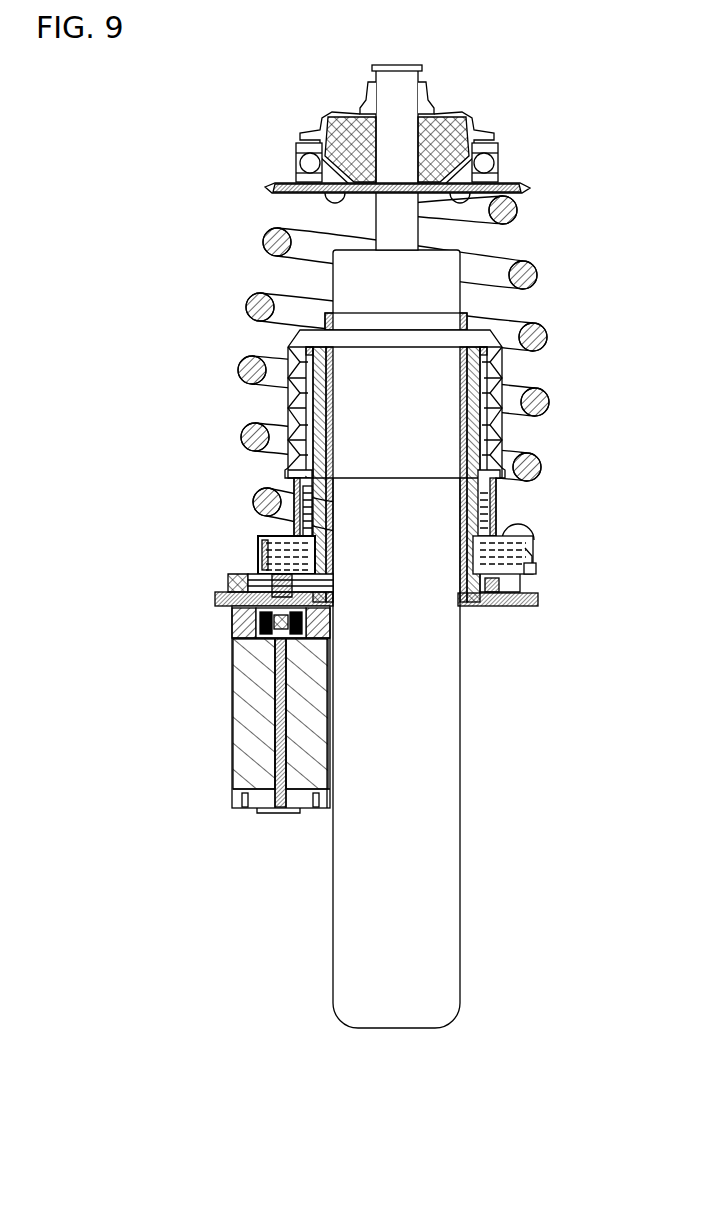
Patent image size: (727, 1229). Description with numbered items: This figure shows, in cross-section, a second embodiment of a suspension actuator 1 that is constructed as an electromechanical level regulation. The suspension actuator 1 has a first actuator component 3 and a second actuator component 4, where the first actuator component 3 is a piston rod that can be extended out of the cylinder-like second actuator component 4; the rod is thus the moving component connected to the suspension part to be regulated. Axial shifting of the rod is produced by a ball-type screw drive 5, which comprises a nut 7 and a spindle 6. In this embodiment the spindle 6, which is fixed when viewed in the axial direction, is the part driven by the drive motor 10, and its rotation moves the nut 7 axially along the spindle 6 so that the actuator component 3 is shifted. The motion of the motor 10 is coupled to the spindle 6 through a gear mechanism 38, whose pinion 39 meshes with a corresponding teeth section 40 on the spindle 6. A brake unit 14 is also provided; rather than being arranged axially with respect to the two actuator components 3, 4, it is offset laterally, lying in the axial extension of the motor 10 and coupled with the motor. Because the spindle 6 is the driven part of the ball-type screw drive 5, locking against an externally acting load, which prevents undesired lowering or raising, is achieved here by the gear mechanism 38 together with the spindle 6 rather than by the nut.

The suspension actuator 1 is at (192, 192).
The first actuator component 3 is at (403, 97).
The second actuator component 4 is at (438, 822).
The ball-type screw drive 5 is at (248, 401).
The spindle 6 is at (494, 420).
The nut 7 is at (298, 521).
The drive motor 10 is at (228, 768).
The brake unit 14 is at (213, 603).
The gear mechanism 38 is at (225, 581).
The pinion 39 is at (262, 563).
The teeth section 40 is at (511, 562).